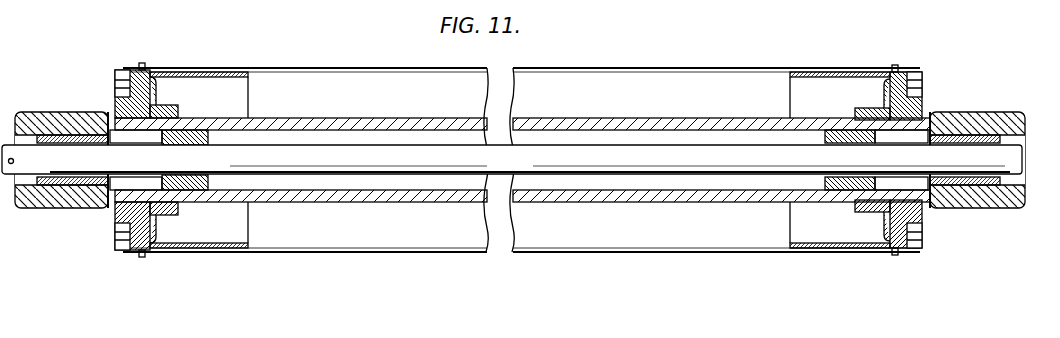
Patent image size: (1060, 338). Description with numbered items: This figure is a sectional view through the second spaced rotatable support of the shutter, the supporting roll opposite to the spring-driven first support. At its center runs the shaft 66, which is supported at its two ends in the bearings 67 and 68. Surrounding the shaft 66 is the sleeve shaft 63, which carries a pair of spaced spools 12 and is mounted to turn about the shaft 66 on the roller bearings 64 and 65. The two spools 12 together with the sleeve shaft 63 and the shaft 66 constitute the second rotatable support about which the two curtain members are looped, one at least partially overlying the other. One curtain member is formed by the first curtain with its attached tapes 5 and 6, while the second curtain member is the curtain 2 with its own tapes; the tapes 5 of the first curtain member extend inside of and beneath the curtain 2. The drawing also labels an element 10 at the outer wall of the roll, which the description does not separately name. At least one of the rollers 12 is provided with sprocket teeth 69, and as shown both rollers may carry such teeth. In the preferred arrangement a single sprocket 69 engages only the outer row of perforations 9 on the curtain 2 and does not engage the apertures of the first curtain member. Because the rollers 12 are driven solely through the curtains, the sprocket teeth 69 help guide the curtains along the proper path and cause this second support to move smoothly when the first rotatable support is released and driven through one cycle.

The curtain 2 is at (653, 68).
The tape 5 is at (250, 72).
The tape 6 is at (796, 252).
The outer row of perforations 9 is at (150, 68).
The liner 10 is at (220, 70).
The spool 12 is at (248, 86).
The sleeve shaft 63 is at (410, 118).
The roller bearing 64 is at (160, 140).
The roller bearing 65 is at (912, 140).
The shaft 66 is at (624, 168).
The bearing 67 is at (70, 112).
The bearing 68 is at (975, 112).
The sprocket teeth 69 is at (142, 63).